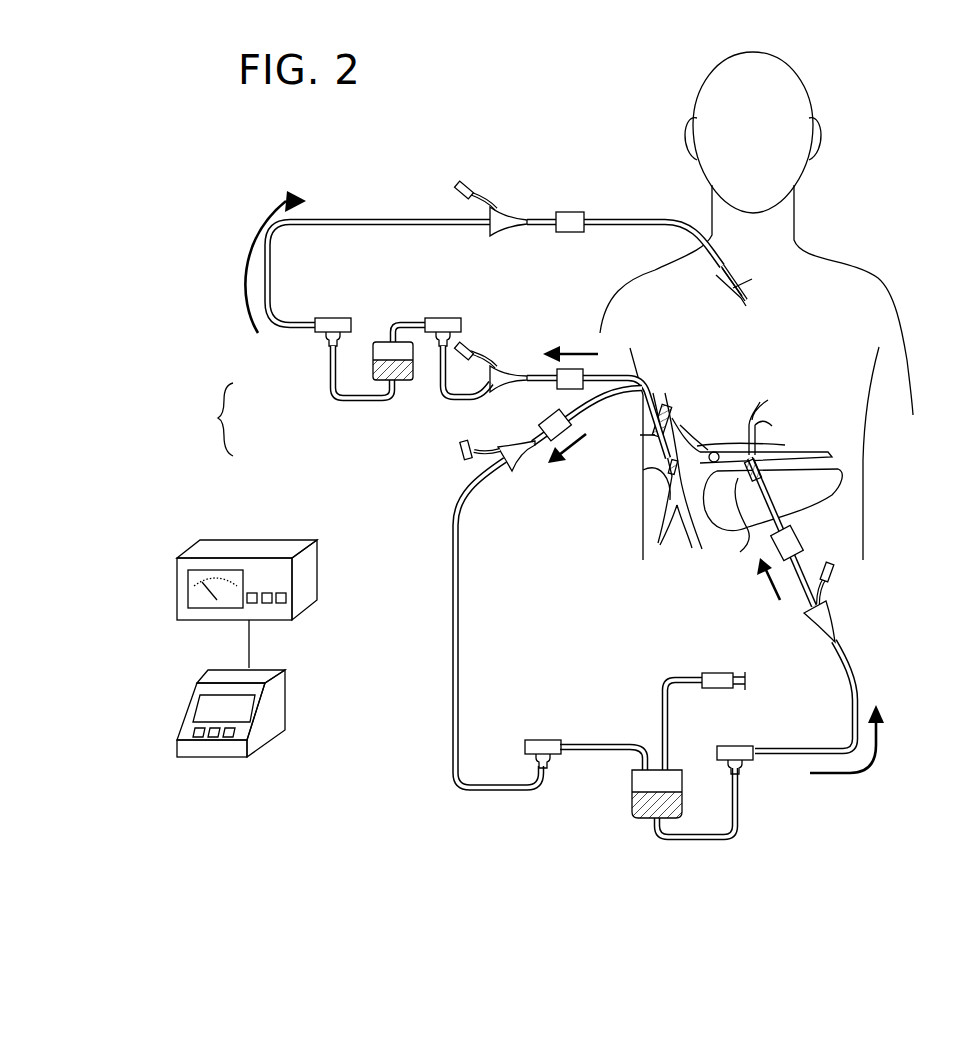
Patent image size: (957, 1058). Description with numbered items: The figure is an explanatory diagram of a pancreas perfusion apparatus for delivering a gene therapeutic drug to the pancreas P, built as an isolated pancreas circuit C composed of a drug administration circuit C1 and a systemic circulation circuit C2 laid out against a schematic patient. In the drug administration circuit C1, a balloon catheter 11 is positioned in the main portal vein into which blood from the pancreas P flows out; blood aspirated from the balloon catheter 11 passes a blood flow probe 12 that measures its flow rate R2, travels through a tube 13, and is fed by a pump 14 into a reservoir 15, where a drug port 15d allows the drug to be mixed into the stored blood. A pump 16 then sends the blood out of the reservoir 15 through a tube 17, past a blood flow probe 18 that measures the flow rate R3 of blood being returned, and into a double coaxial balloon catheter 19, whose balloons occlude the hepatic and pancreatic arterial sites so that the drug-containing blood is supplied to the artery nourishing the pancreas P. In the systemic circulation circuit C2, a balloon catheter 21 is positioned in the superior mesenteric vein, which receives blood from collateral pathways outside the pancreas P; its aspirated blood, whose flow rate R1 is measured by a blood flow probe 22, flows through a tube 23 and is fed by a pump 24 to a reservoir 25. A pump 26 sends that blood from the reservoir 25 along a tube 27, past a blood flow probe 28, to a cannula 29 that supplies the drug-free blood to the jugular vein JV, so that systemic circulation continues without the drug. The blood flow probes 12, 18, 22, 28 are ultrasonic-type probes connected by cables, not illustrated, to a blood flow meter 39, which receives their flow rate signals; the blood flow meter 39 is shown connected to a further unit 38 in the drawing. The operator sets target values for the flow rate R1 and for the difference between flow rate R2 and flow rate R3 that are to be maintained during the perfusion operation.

The balloon catheter 11 is at (655, 422).
The blood flow probe 12 is at (542, 432).
The tube 13 is at (452, 625).
The pump 14 is at (545, 740).
The reservoir 15 is at (632, 808).
The drug port 15d is at (720, 673).
The pump 16 is at (740, 746).
The tube 17 is at (852, 670).
The blood flow probe 18 is at (801, 540).
The double coaxial balloon catheter 19 is at (752, 478).
The balloon catheter 21 is at (666, 476).
The blood flow probe 22 is at (556, 386).
The tube 23 is at (445, 400).
The pump 24 is at (445, 318).
The reservoir 25 is at (384, 342).
The pump 26 is at (335, 318).
The tube 27 is at (360, 218).
The blood flow probe 28 is at (580, 212).
The cannula 29 is at (726, 263).
The controller 38 is at (180, 706).
The blood flow meter 39 is at (177, 578).
The isolated pancreas circuit C is at (213, 419).
The drug administration circuit C1 is at (452, 535).
The systemic circulation circuit C2 is at (293, 333).
The jugular vein JV is at (737, 302).
The pancreas P is at (842, 490).
The flow rate R1 is at (570, 341).
The flow rate R2 is at (573, 454).
The flow rate R3 is at (762, 579).